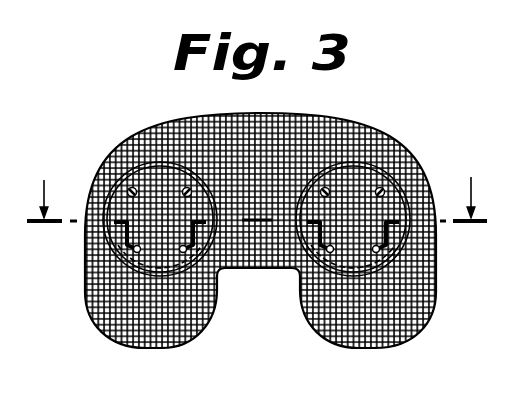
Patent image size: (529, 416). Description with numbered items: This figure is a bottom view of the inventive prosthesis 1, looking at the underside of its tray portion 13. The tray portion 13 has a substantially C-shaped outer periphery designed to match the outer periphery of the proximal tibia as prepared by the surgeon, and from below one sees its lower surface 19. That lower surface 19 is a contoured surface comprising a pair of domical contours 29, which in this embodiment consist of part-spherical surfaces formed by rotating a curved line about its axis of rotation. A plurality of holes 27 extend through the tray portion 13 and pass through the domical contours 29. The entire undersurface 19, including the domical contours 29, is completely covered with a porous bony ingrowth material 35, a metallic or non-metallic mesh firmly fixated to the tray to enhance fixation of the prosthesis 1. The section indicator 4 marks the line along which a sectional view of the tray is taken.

The prosthesis 1 is at (401, 96).
The tray portion 13 is at (428, 322).
The lower surface 19 is at (253, 258).
The holes 27 is at (129, 187).
The domical contours 29 is at (153, 186).
The porous bony ingrowth material 35 is at (278, 150).
The section line 4- 4 is at (257, 213).